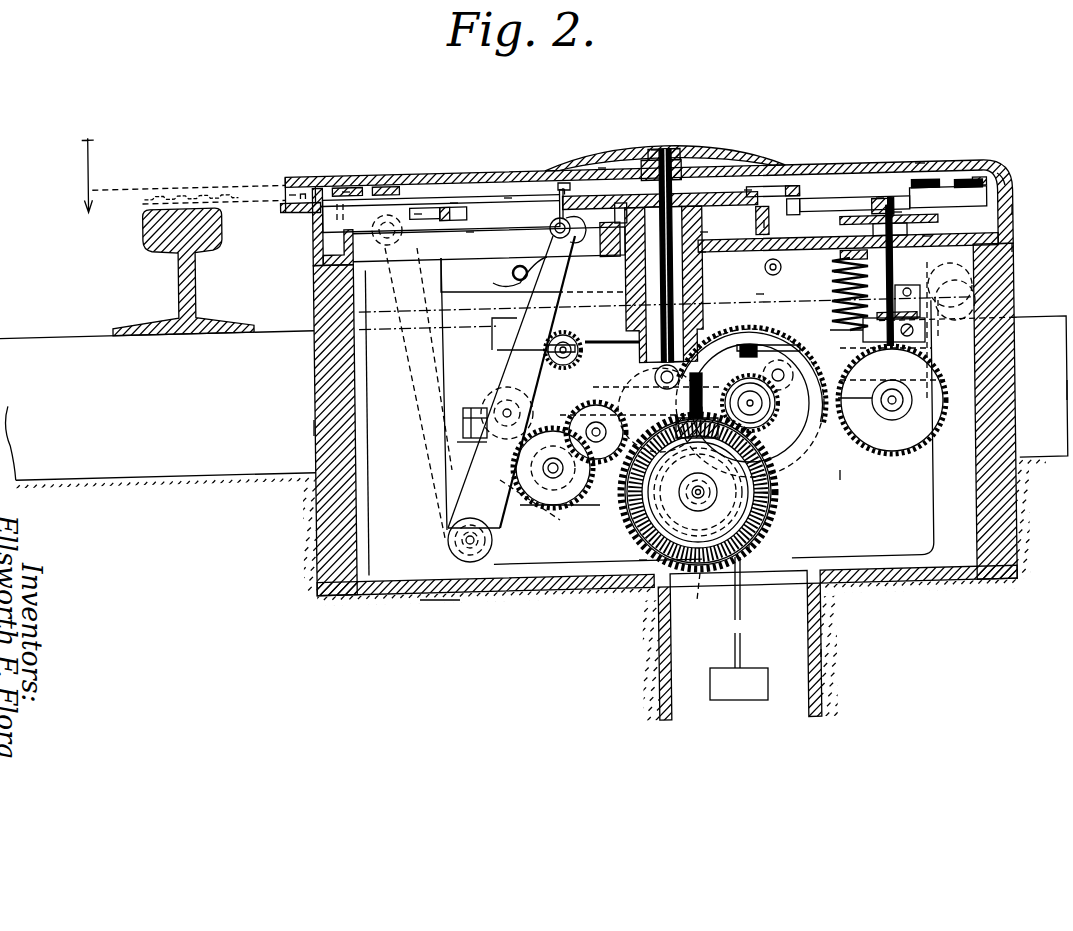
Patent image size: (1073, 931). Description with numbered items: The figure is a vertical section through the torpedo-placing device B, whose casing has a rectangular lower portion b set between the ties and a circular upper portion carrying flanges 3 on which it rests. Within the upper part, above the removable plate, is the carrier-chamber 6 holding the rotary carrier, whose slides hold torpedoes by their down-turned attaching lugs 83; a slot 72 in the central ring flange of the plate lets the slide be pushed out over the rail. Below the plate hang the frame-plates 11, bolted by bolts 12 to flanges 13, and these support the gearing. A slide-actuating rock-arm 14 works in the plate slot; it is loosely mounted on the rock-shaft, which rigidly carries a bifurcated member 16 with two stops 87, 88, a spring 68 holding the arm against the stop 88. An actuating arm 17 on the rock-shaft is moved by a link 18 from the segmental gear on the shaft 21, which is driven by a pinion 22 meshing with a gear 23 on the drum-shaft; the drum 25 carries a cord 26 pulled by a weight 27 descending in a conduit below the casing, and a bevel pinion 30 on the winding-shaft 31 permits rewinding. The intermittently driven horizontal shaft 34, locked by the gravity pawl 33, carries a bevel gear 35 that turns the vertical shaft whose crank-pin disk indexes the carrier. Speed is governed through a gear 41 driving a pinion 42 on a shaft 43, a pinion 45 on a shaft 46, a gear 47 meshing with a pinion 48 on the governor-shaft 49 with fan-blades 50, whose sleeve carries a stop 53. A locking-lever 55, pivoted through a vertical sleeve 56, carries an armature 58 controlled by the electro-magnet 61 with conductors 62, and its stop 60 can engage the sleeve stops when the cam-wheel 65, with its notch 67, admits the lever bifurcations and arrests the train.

The flanges 3 is at (167, 173).
The carrier-chamber 6 is at (1017, 172).
The frame-plates 11 is at (863, 492).
The bolts 12 is at (787, 272).
The flanges 13 is at (437, 277).
The slide-actuating rock-arm 14 is at (404, 358).
The bifurcated member 16 is at (444, 472).
The actuating arm 17 is at (490, 376).
The link 18 is at (573, 434).
The shaft 21 is at (813, 414).
The pinion 22 is at (760, 418).
The gear 23 is at (770, 523).
The drum 25 is at (697, 600).
The cord or cable 26 is at (742, 593).
The weight 27 is at (730, 687).
The bevel pinion 30 is at (713, 506).
The winding-shaft 31 is at (760, 268).
The gravity-actuated locking-pawl 33 is at (845, 300).
The horizontally disposed shaft 34 is at (893, 403).
The bevel gear 35 is at (902, 452).
The gear 41 is at (820, 409).
The pinion 42 is at (630, 385).
The shaft 43 is at (680, 380).
The pinion 45 is at (600, 457).
The shaft 46 is at (593, 430).
The gear 47 is at (597, 498).
The pinion 48 is at (622, 337).
The governor-shaft 49 is at (553, 344).
The fan-blades 50 is at (580, 318).
The stop 53 is at (548, 300).
The locking-lever 55 is at (770, 343).
The vertically disposed sleeve 56 is at (910, 387).
The armature 58 is at (917, 350).
The stop 60 is at (507, 403).
The electro-magnet 61 is at (923, 300).
The conductors 62 is at (1016, 273).
The cam-wheel 65 is at (773, 490).
The notch 67 is at (850, 438).
The spring 68 is at (525, 486).
The slot 72 is at (566, 182).
The attaching lugs 83 is at (367, 200).
The stop 87 is at (467, 417).
The stop 88 is at (457, 442).
The casing lower portion b is at (1011, 420).
The device B is at (440, 624).